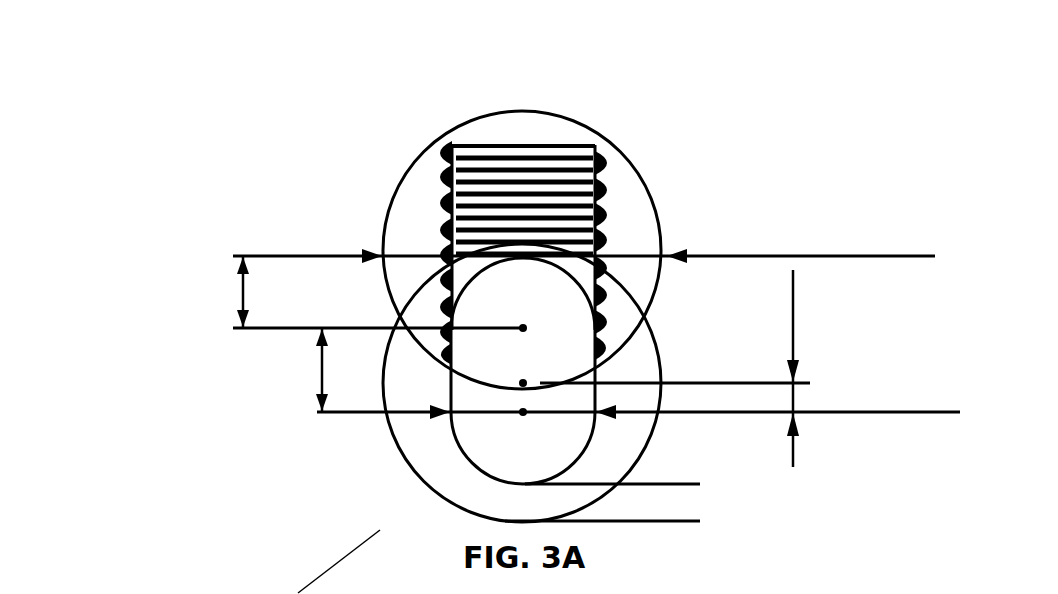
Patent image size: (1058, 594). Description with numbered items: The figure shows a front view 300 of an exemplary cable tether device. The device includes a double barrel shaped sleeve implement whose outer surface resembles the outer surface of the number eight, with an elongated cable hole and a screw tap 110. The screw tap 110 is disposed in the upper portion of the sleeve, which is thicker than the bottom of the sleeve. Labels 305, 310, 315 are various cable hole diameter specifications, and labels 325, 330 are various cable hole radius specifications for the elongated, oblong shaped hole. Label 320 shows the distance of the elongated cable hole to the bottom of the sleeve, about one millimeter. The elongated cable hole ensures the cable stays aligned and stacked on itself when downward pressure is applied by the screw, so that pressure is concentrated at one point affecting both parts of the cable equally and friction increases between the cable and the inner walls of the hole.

The front view 300 is at (205, 96).
The screw tap 110 is at (607, 190).
The cable hole diameter specification 305 is at (584, 241).
The cable hole diameter specification 310 is at (638, 397).
The cable hole diameter specification 315 is at (664, 368).
The distance of the elongated cable hole to the bottom of the sleeve 320 is at (642, 502).
The cable hole radius specification 325 is at (307, 370).
The cable hole radius specification 330 is at (366, 294).